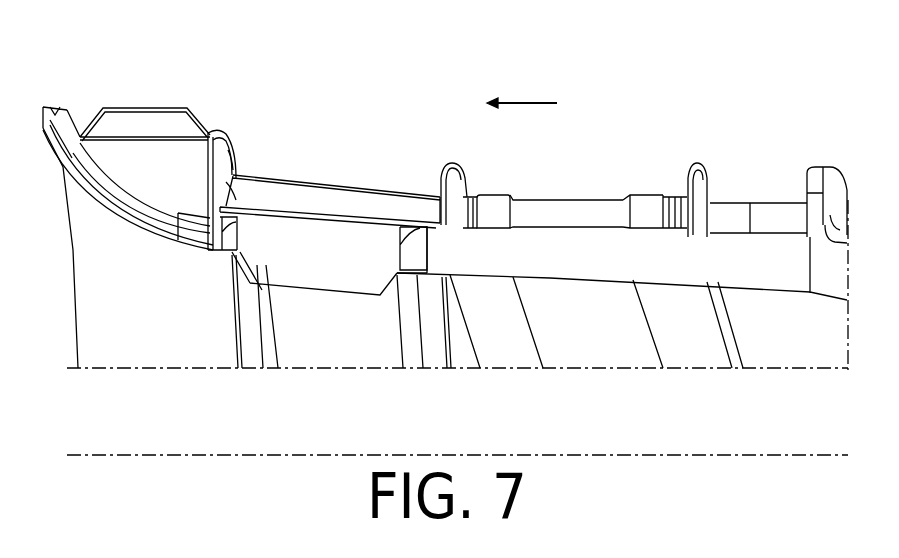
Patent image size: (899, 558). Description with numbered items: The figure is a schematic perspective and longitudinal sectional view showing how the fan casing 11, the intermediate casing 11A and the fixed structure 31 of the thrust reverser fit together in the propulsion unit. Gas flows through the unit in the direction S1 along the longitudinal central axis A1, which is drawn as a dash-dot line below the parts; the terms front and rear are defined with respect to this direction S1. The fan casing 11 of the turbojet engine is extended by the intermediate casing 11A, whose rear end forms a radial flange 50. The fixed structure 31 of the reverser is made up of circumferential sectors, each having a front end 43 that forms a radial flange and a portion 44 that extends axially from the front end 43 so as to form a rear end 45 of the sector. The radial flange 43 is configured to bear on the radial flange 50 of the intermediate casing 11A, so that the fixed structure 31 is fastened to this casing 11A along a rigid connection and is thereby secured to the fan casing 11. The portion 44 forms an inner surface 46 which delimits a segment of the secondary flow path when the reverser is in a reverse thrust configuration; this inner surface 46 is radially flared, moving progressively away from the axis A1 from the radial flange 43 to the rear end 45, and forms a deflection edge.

The fixed structure 31 is at (151, 87).
The portion 44 is at (128, 187).
The front end 43 is at (218, 152).
The radial flange 50 is at (234, 160).
The intermediate casing 11A is at (320, 195).
The fan casing 11 is at (568, 212).
The direction of gas flow S1 is at (520, 102).
The rear end 45 is at (72, 283).
The inner surface 46 is at (137, 312).
The longitudinal central axis A1 is at (755, 455).